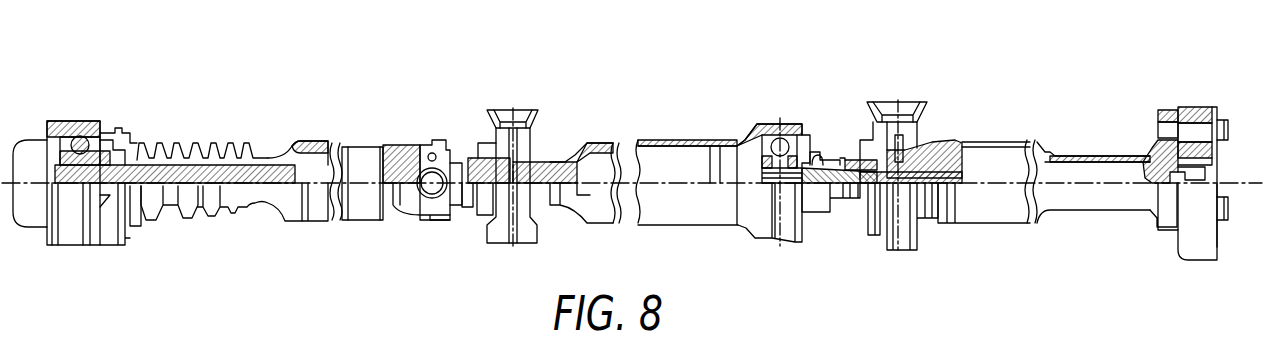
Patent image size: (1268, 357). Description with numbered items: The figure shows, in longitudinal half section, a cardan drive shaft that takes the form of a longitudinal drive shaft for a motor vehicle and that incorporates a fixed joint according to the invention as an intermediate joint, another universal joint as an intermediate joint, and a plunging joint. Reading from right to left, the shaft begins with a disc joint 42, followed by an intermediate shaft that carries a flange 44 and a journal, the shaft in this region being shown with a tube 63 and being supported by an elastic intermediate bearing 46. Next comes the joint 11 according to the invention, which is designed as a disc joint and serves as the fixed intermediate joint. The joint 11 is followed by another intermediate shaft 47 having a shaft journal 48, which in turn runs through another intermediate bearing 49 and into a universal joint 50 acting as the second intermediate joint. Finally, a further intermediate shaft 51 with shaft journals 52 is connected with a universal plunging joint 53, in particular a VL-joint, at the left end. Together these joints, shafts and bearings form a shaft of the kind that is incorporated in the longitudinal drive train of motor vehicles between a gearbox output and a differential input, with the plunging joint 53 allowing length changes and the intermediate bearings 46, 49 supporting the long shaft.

The universal plunging joint 53 is at (83, 102).
The shaft journals 52 is at (201, 149).
The intermediate shaft 51 is at (273, 139).
The universal joint 50 is at (430, 122).
The intermediate bearing 49 is at (505, 110).
The shaft journal 48 is at (551, 156).
The intermediate shaft 47 is at (677, 119).
The joint 11 is at (784, 110).
The elastic intermediate bearing 46 is at (898, 108).
The shaft tube 63 is at (1019, 108).
The flange 44 is at (1163, 109).
The disc joint 42 is at (1203, 88).